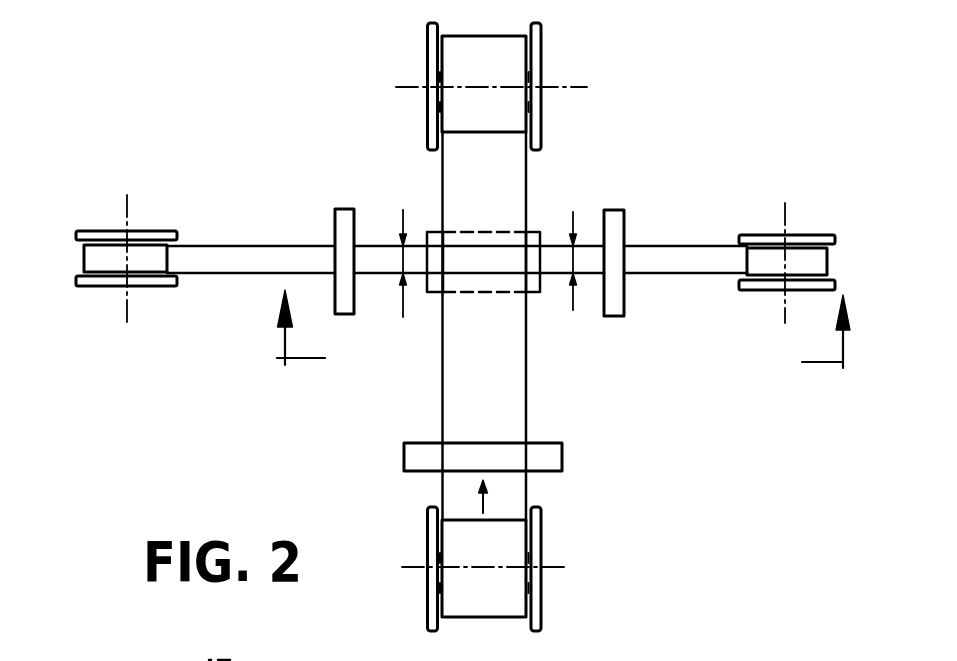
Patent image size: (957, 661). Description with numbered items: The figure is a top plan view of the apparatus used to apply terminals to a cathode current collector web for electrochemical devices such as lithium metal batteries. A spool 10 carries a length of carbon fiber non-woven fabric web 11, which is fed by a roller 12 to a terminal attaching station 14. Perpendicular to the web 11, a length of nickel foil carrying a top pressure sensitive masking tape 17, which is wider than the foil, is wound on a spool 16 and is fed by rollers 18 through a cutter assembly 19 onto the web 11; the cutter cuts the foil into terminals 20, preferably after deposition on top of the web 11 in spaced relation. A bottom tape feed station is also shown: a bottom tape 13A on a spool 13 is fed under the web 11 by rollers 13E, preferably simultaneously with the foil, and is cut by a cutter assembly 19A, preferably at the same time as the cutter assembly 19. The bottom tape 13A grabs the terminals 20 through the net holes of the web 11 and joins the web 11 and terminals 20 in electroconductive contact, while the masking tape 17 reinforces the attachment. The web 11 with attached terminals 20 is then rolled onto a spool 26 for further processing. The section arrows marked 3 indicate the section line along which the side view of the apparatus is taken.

The spool 10 is at (535, 575).
The web 11 is at (512, 485).
The roller 12 is at (552, 453).
The spool 13 is at (97, 233).
The bottom tape 13A is at (220, 260).
The rollers 13E is at (342, 227).
The terminal attaching station 14 is at (388, 208).
The spool 16 is at (803, 233).
The top pressure sensitive masking tape 17 is at (685, 267).
The rollers 18 is at (624, 225).
The cutter assembly 19 is at (602, 210).
The cutter assembly 19A is at (402, 302).
The terminals 20 is at (495, 263).
The spool 26 is at (537, 60).
The section line 3- 3 is at (563, 329).